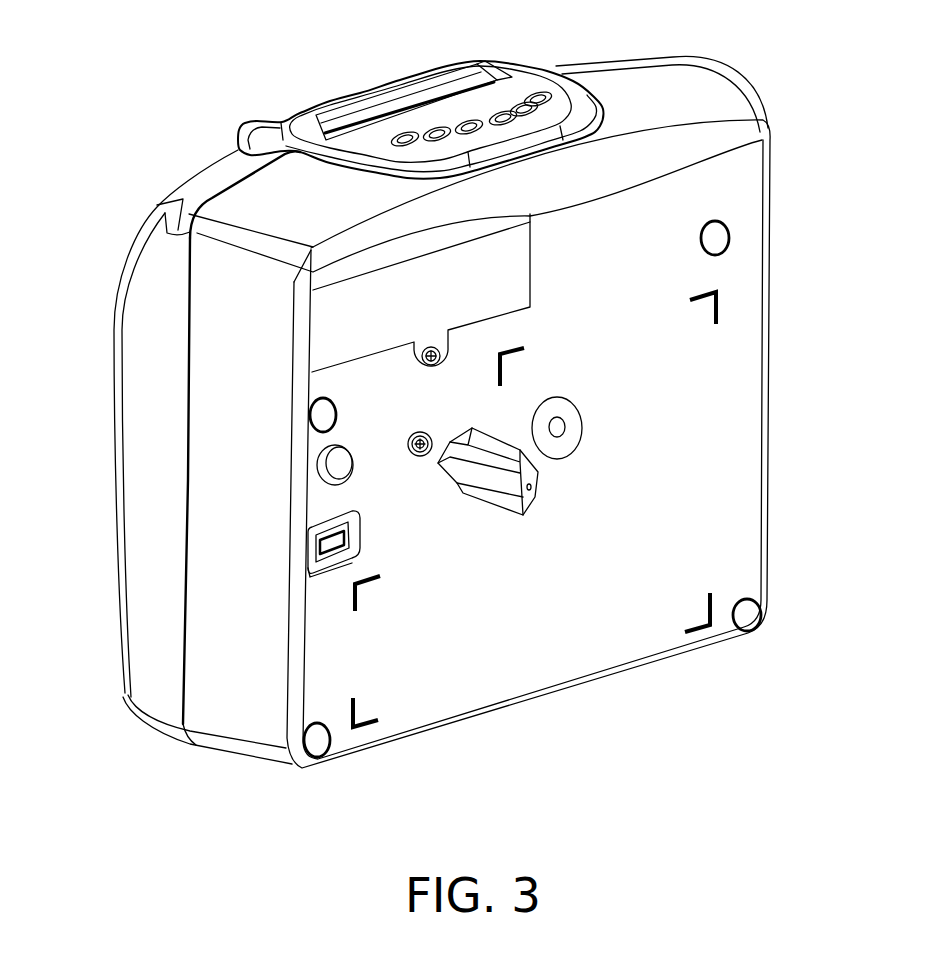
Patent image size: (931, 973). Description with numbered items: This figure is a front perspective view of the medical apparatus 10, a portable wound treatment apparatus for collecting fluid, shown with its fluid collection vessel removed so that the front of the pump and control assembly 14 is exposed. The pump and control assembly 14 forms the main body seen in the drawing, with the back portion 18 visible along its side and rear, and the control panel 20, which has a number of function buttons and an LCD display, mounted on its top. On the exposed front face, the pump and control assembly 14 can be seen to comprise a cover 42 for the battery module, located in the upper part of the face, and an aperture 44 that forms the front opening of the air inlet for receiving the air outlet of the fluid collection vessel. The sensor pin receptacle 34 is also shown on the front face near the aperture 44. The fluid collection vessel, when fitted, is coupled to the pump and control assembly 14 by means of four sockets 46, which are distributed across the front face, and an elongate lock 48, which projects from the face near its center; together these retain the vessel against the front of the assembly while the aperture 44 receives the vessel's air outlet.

The medical apparatus 10 is at (122, 143).
The pump and control assembly 14 is at (698, 99).
The back portion 18 is at (177, 409).
The control panel 20 is at (503, 73).
The sensor pin receptacle 34 is at (357, 539).
The cover 42 is at (497, 276).
The aperture 44 is at (338, 468).
The sockets 46 is at (731, 238).
The elongate lock 48 is at (536, 516).